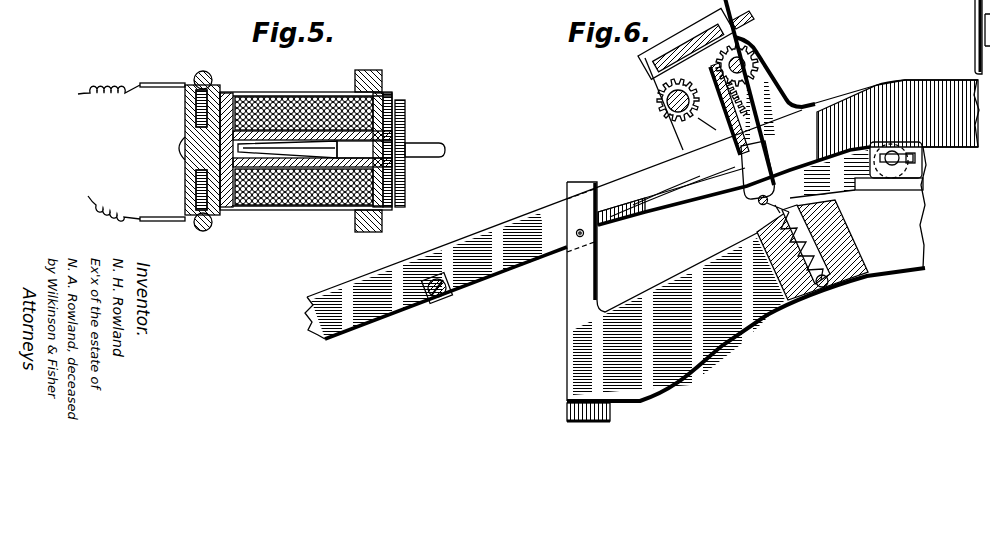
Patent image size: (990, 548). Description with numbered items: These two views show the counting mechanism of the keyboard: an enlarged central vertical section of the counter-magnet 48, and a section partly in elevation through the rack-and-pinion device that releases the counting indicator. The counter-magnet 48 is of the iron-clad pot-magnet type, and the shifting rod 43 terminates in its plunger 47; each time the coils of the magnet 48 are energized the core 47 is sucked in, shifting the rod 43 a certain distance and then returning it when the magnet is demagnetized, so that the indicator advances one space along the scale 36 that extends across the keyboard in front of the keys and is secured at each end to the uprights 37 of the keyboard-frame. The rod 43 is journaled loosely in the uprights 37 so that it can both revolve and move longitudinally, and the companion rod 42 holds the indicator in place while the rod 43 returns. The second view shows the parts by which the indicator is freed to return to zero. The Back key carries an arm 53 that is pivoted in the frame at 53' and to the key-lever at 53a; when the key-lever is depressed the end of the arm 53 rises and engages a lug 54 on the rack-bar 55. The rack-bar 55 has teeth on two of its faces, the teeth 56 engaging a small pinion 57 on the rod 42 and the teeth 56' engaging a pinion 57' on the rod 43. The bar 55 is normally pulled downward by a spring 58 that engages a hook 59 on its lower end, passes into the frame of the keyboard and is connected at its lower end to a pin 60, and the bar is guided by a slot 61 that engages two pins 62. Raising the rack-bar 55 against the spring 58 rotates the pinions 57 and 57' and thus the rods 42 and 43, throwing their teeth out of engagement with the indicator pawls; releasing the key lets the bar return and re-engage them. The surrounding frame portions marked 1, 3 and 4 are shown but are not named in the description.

In FIG. 6, the frame 1 is at (919, 268).
In FIG. 6, the bracket 3 is at (913, 163).
In FIG. 6, the bar 4 is at (357, 281).
In FIG. 6, the scale 36 is at (681, 42).
In FIG. 6, the uprights 37 is at (673, 141).
In FIG. 6, the shifting rod 42 is at (668, 108).
In FIG. 6, the shifting rod 43 is at (748, 63).
In FIG. 5, the plunger 47 is at (341, 151).
In FIG. 5, the counter-magnet 48 is at (296, 97).
In FIG. 6, the arm 53 is at (671, 212).
In FIG. 6, the pivot 53' is at (560, 241).
In FIG. 6, the pivot 53a is at (437, 298).
In FIG. 6, the lug 54 is at (728, 174).
In FIG. 6, the rack-bar 55 is at (772, 148).
In FIG. 6, the teeth 56 is at (692, 135).
In FIG. 6, the teeth 56' is at (770, 92).
In FIG. 6, the pinion 57 is at (679, 84).
In FIG. 6, the pinion 57' is at (759, 33).
In FIG. 6, the spring 58 is at (835, 232).
In FIG. 6, the hook 59 is at (760, 204).
In FIG. 6, the pin 60 is at (833, 287).
In FIG. 6, the slot 61 is at (758, 134).
In FIG. 6, the pins 62 is at (735, 143).